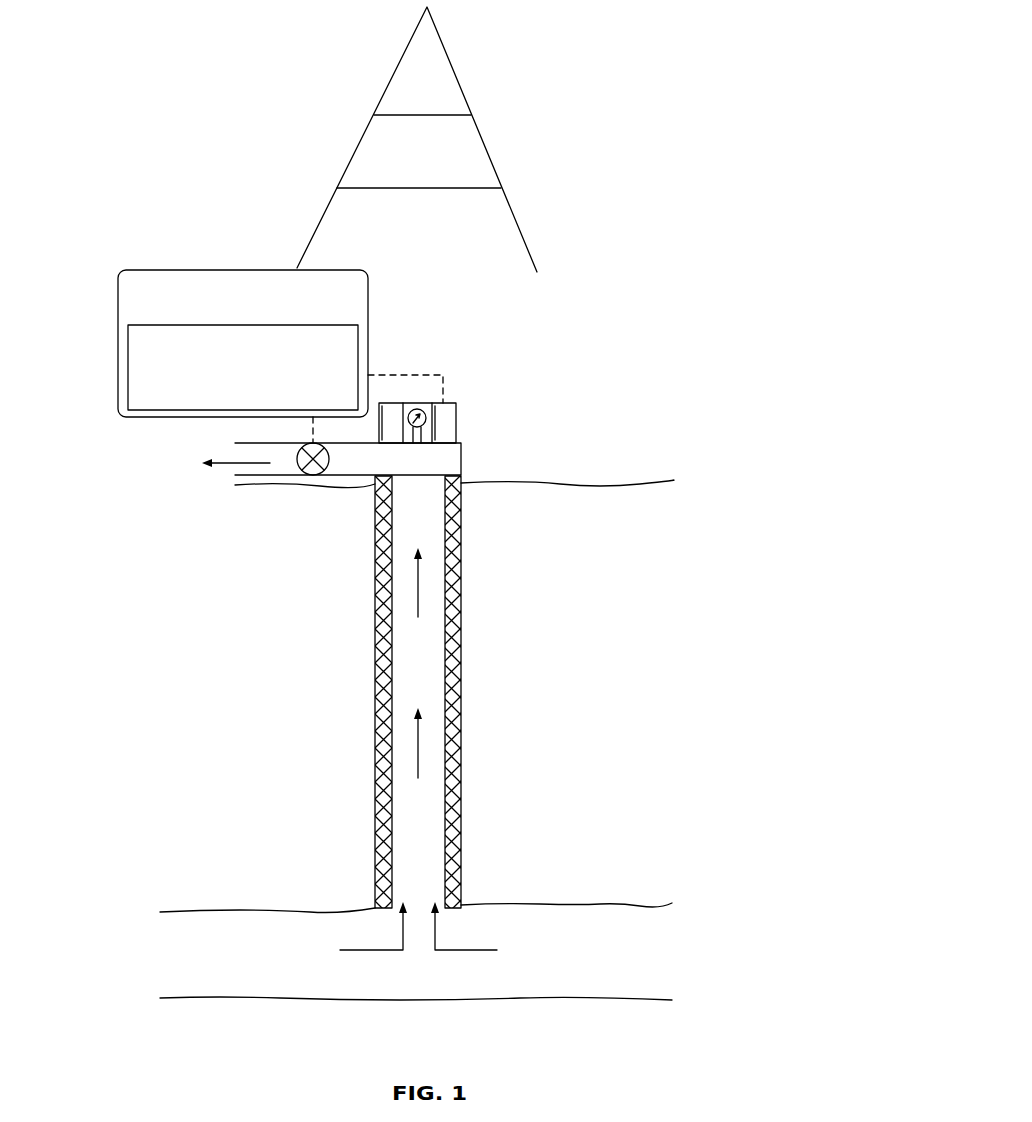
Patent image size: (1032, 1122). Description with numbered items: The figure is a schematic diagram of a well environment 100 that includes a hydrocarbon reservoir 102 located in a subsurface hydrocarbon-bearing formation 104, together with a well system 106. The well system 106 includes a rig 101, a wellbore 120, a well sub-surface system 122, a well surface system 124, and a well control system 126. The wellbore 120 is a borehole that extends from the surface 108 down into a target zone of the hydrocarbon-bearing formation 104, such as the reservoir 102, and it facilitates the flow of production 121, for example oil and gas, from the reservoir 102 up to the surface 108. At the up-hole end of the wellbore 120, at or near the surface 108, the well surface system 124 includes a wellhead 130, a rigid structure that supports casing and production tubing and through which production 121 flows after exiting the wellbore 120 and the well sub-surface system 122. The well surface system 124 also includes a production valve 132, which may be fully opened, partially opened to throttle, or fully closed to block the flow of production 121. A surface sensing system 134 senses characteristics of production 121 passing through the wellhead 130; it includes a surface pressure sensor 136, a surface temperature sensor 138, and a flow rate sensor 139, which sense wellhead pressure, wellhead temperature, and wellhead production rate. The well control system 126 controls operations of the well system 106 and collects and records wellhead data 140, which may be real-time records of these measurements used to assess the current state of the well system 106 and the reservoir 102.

The well environment 100 is at (550, 148).
The rig 101 is at (484, 62).
The hydrocarbon reservoir 102 is at (580, 971).
The hydrocarbon-bearing formation 104 is at (601, 778).
The well system 106 is at (214, 240).
The surface 108 is at (553, 495).
The wellbore 120 is at (470, 628).
The production 121 is at (169, 452).
The well sub-surface system 122 is at (365, 722).
The well surface system 124 is at (640, 322).
The well control system 126 is at (160, 320).
The wellhead 130 is at (470, 464).
The production valve 132 is at (312, 477).
The surface sensing system 134 is at (465, 414).
The surface pressure sensor 136 is at (416, 403).
The surface temperature sensor 138 is at (442, 403).
The flow rate sensor 139 is at (390, 403).
The wellhead data 140 is at (259, 391).